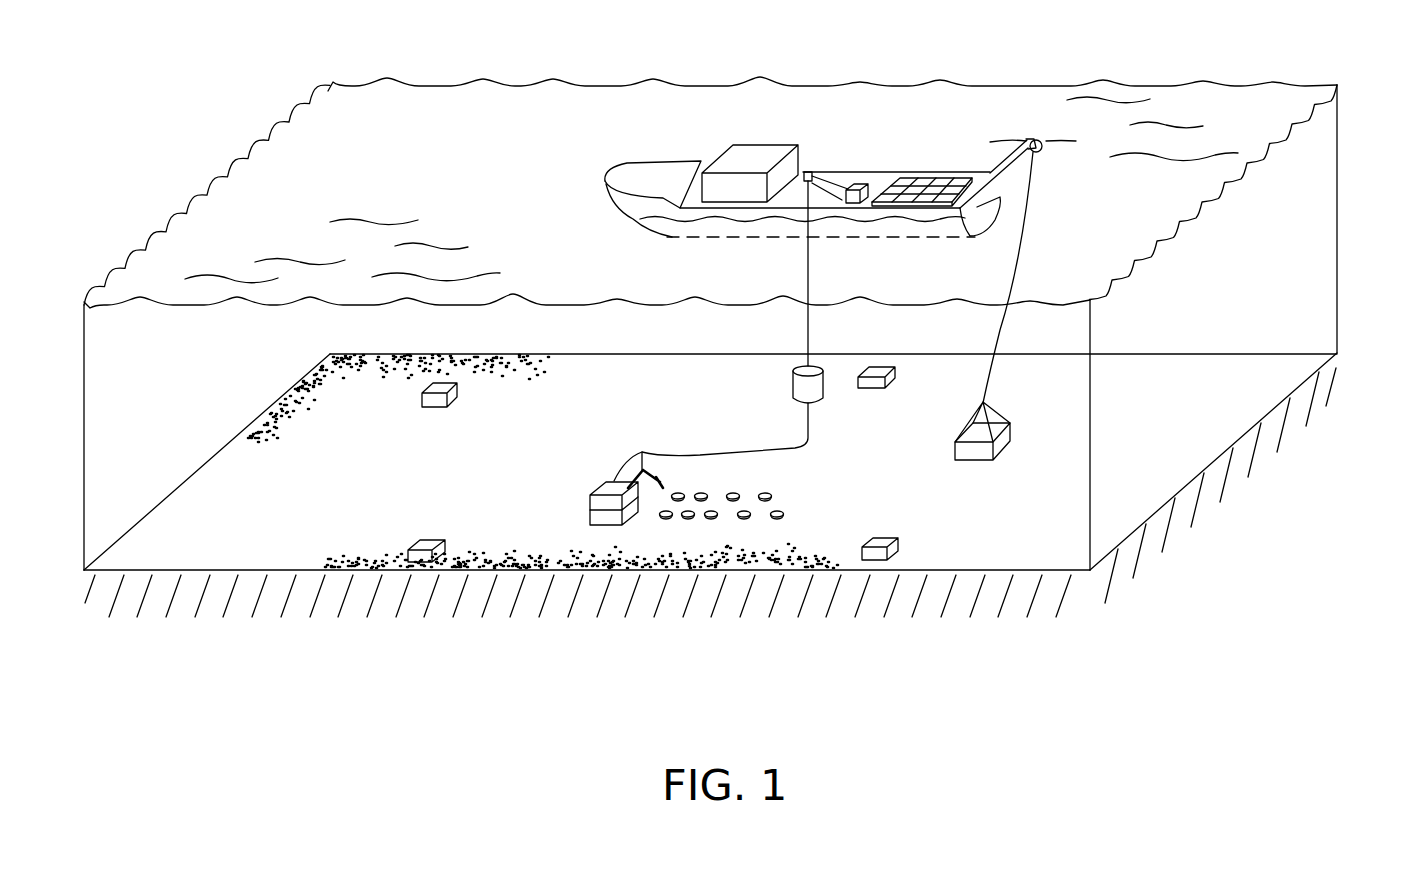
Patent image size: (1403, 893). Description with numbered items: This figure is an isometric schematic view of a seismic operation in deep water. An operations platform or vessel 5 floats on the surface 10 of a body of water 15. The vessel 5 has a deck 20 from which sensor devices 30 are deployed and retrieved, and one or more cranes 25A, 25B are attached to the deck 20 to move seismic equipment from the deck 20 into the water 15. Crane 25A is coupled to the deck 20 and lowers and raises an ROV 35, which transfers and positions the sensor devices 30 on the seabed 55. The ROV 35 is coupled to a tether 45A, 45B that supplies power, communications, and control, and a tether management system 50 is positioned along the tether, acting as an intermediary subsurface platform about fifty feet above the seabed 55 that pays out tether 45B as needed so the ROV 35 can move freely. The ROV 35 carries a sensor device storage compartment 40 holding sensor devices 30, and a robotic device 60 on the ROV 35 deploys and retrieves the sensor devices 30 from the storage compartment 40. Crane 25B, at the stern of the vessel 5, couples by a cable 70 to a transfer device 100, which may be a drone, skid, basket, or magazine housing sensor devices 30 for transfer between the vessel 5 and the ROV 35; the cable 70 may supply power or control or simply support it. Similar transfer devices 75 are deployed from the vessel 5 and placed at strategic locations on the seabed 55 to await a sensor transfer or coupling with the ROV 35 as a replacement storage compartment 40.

The vessel 5 is at (650, 175).
The surface 10 is at (1238, 100).
The body of water 15 is at (1313, 220).
The deck 20 is at (922, 180).
The crane 25A is at (809, 175).
The crane 25B is at (1033, 138).
The sensor devices 30 is at (772, 494).
The ROV 35 is at (590, 497).
The sensor device storage compartment 40 is at (590, 520).
The tether 45A is at (805, 270).
The tether 45B is at (685, 455).
The tether management system 50 is at (793, 388).
The seabed 55 is at (736, 560).
The robotic device 60 is at (642, 453).
The cable 70 is at (1003, 262).
The transfer devices 75 is at (890, 538).
The transfer device 100 is at (973, 432).